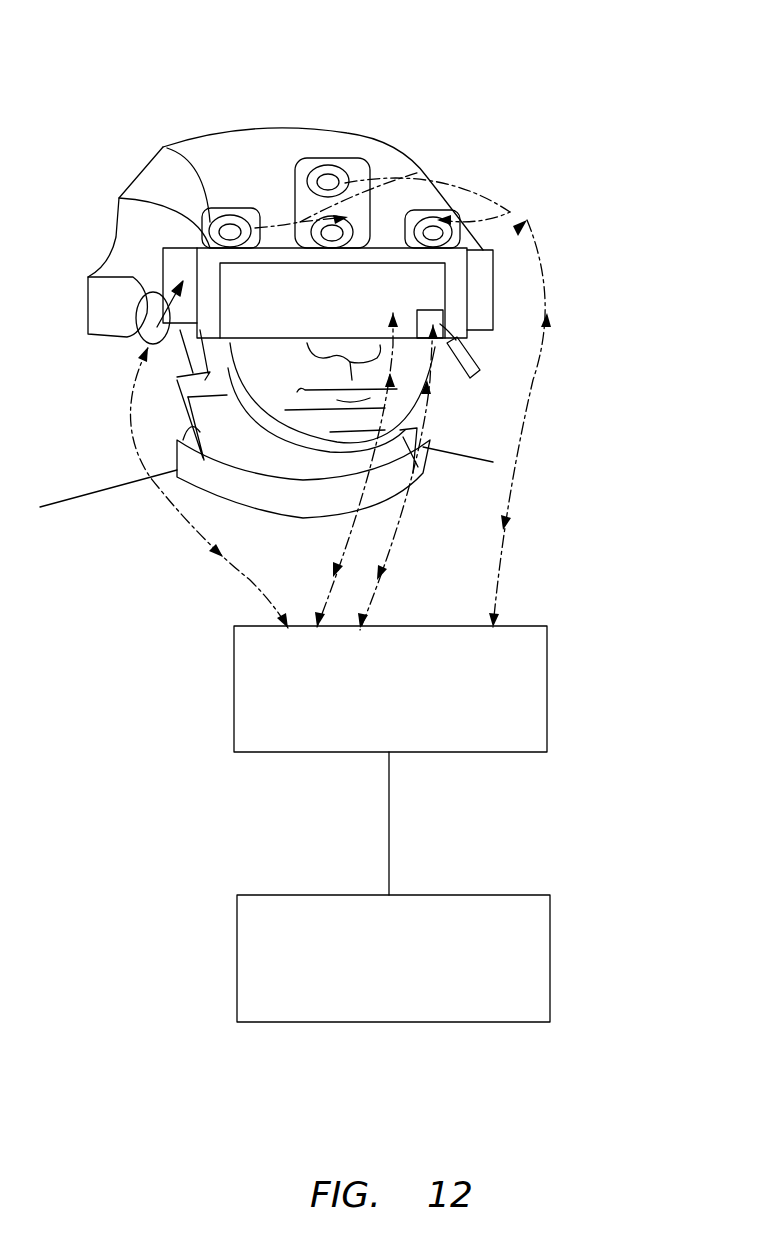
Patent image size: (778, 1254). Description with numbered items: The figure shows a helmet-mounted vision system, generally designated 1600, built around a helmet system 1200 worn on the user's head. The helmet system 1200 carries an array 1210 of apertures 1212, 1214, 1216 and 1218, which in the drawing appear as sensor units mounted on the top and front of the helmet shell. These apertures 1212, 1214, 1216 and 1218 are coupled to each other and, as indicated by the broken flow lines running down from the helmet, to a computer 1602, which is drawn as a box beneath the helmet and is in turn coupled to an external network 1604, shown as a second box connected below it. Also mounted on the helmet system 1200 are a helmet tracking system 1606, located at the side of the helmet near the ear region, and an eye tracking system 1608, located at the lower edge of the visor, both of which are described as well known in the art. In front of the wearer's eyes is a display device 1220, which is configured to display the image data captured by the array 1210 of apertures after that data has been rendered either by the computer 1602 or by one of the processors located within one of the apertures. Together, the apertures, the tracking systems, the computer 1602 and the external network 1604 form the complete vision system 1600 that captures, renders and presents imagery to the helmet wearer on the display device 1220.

The helmet-mounted vision system 1600 is at (612, 122).
The helmet system 1200 is at (529, 178).
The array of apertures 1210 is at (298, 139).
The aperture 1212 is at (330, 162).
The aperture 1214 is at (243, 221).
The aperture 1216 is at (313, 213).
The aperture 1218 is at (436, 249).
The display device 1220 is at (332, 300).
The helmet tracking system 1606 is at (160, 264).
The eye tracking system 1608 is at (458, 335).
The computer 1602 is at (268, 752).
The external network 1604 is at (270, 1022).